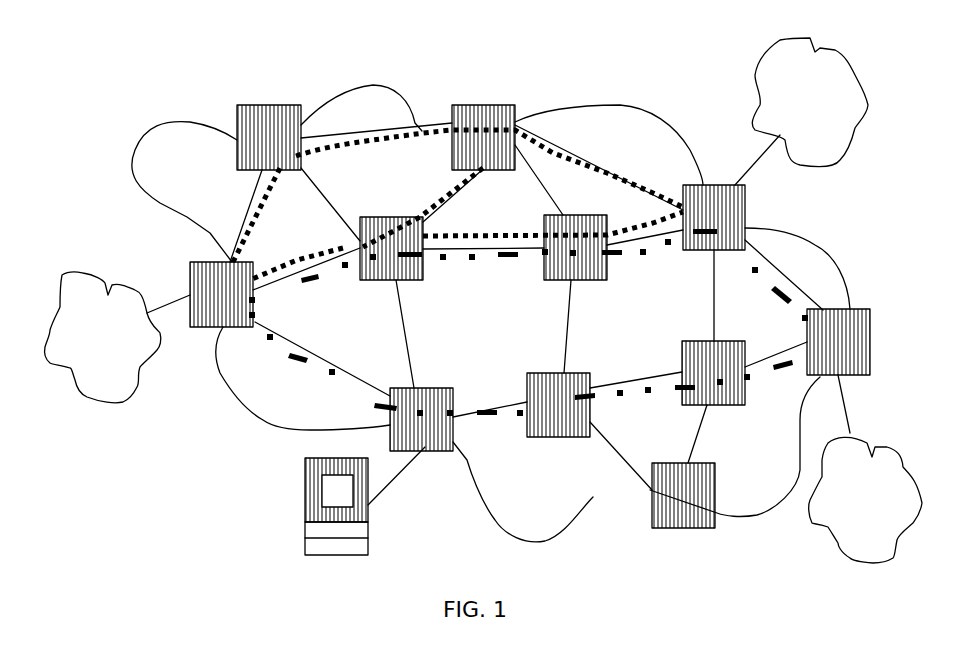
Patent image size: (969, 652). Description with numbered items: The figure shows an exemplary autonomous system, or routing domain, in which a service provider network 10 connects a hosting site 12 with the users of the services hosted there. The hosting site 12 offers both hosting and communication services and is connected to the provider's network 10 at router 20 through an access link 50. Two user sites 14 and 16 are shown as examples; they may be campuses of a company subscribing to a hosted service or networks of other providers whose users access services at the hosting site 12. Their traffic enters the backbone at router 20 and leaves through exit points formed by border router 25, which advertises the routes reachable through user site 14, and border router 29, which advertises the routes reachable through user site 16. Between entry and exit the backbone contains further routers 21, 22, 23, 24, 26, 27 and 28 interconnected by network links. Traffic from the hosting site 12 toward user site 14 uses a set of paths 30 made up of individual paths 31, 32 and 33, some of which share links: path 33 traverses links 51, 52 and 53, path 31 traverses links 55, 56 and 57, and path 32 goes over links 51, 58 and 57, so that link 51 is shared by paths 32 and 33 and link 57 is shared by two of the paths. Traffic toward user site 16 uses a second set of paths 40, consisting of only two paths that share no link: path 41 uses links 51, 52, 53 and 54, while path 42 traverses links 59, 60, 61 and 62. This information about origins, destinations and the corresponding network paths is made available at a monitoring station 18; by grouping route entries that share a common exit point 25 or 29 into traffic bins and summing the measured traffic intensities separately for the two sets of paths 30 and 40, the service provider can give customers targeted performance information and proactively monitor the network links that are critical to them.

The service provider network 10 is at (491, 336).
The hosting site 12 is at (103, 344).
The user site 14 is at (815, 102).
The user site 16 is at (864, 500).
The monitoring station 18 is at (350, 501).
The router 20 is at (214, 282).
The node 21 is at (269, 125).
The node 22 is at (483, 125).
The node 23 is at (379, 238).
The node 24 is at (421, 434).
The border router 25 is at (727, 217).
The node 26 is at (575, 261).
The node 27 is at (558, 419).
The node 28 is at (713, 386).
The border router 29 is at (851, 342).
The set of paths 30 is at (458, 205).
The path 31 is at (264, 214).
The path 32 is at (432, 207).
The path 33 is at (553, 224).
The set of paths 40 is at (528, 322).
The path 41 is at (312, 278).
The path 42 is at (292, 354).
The access link 50 is at (167, 297).
The link 51 is at (306, 275).
The link 52 is at (482, 249).
The link 53 is at (645, 246).
The link 54 is at (784, 275).
The link 55 is at (238, 216).
The link 56 is at (376, 125).
The link 57 is at (599, 167).
The link 58 is at (439, 196).
The link 59 is at (322, 359).
The link 60 is at (490, 399).
The link 61 is at (636, 375).
The link 62 is at (776, 348).